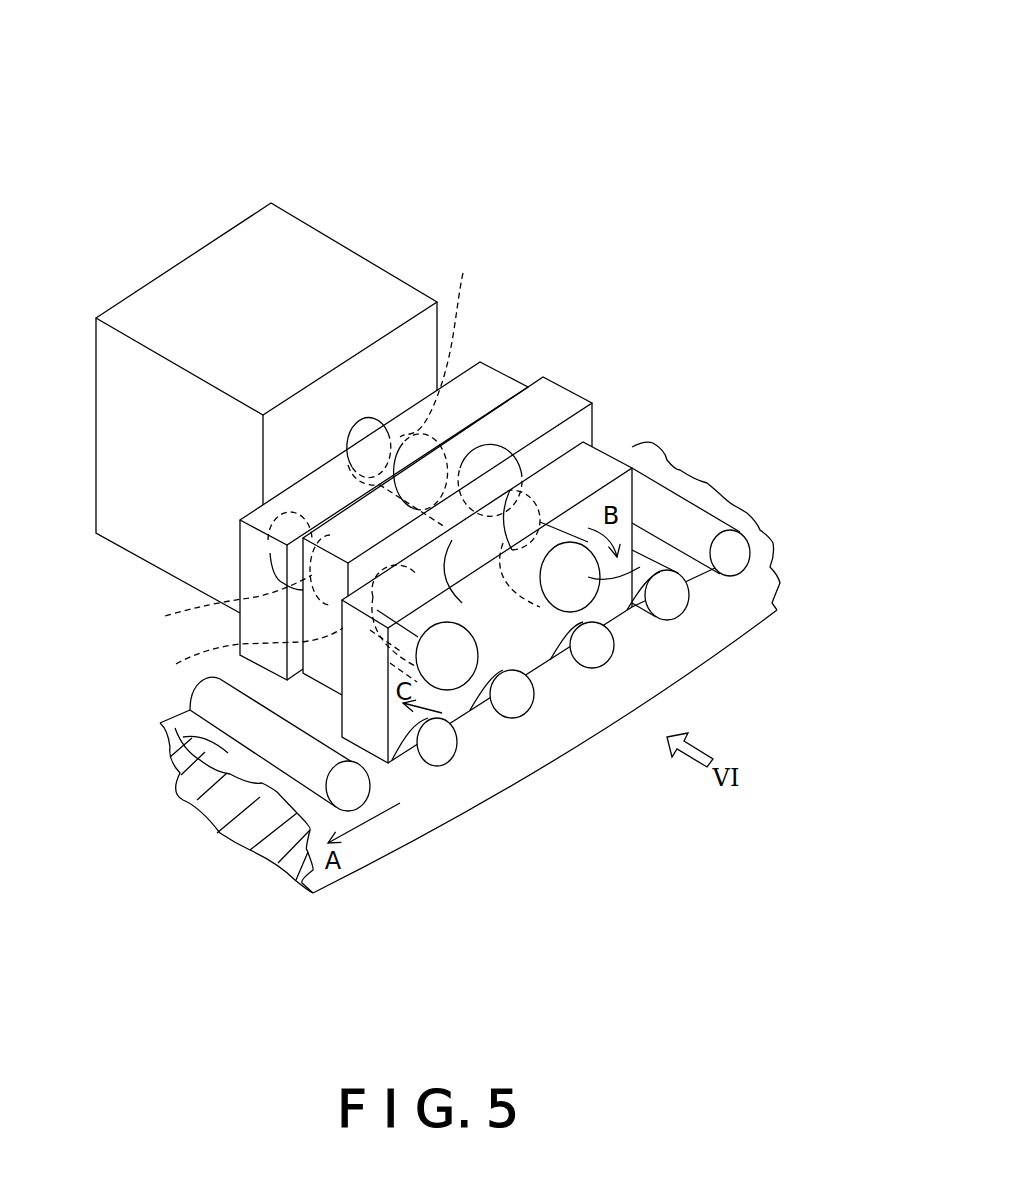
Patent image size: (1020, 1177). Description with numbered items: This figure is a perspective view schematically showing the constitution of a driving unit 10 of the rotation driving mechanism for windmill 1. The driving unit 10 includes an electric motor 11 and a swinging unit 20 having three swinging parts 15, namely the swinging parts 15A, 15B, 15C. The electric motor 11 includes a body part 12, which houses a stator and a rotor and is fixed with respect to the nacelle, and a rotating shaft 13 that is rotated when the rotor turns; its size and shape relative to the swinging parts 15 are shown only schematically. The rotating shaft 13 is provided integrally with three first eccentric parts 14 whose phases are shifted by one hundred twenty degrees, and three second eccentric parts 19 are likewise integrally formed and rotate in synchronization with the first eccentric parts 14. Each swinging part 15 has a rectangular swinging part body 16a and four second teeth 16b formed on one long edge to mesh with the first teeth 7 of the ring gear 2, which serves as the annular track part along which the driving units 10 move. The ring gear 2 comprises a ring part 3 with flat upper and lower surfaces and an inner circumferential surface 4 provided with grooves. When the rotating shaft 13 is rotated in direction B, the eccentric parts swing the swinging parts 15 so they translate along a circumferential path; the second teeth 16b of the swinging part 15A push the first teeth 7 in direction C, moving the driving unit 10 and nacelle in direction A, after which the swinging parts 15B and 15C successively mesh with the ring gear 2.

The rotation driving mechanism for windmill 1 is at (438, 524).
The ring gear 2 is at (456, 740).
The ring part 3 is at (380, 864).
The inner circumferential surface 4 is at (173, 753).
The first teeth 7 is at (452, 773).
The driving unit 10 is at (438, 493).
The electric motor 11 is at (281, 361).
The body part 12 is at (388, 270).
The rotating shaft 13 is at (439, 342).
The first eccentric parts 14 is at (474, 430).
The swinging parts 15 is at (489, 519).
The swinging part 15A is at (618, 460).
The swinging part 15B is at (567, 388).
The swinging part 15C is at (507, 373).
The swinging part body 16a is at (253, 580).
The second teeth 16b is at (408, 757).
The second eccentric parts 19 is at (512, 803).
The swinging unit 20 is at (493, 519).